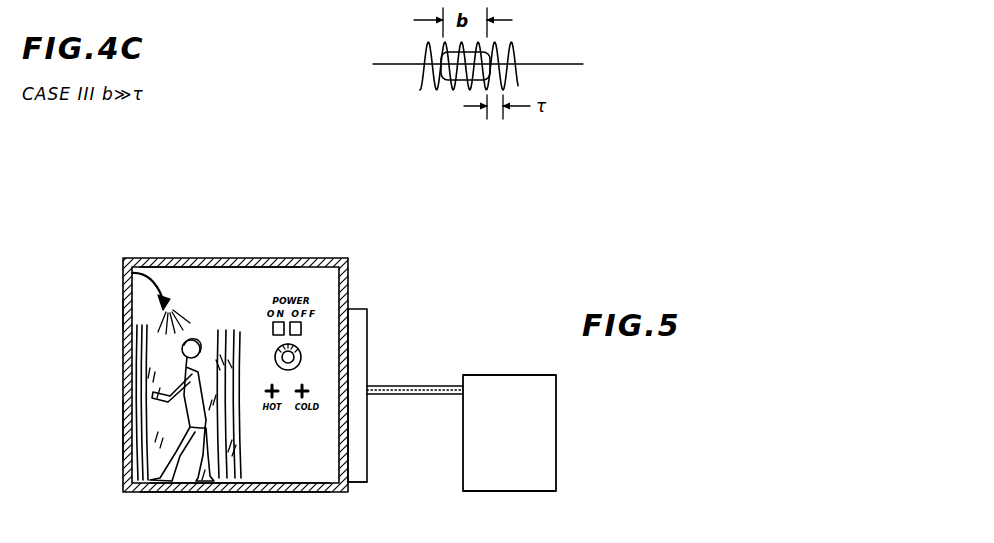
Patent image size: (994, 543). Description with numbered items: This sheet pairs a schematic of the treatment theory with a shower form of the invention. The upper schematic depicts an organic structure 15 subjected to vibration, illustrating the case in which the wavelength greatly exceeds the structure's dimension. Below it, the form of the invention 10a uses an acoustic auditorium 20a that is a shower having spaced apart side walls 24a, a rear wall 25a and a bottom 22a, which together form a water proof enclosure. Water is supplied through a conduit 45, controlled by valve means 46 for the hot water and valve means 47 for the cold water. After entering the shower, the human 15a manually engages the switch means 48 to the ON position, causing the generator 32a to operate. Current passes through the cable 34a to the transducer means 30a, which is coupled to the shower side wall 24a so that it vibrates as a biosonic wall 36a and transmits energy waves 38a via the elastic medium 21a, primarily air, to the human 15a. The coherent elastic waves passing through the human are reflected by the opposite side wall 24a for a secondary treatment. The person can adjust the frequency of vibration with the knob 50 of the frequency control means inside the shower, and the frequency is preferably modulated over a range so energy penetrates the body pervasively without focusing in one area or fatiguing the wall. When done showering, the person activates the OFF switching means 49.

In FIG. 4C, the organic structure 15 is at (445, 83).
In FIG. 5, the form of the invention 10a is at (313, 256).
In FIG. 5, the acoustic auditorium 20a is at (122, 314).
In FIG. 5, the rear wall 25a is at (184, 273).
In FIG. 5, the bottom 22a is at (228, 493).
In FIG. 5, the elastic medium 21a is at (302, 470).
In FIG. 5, the side wall 24a is at (125, 437).
In FIG. 5, the biosonic wall 36a is at (367, 470).
In FIG. 5, the transducer means 30a is at (367, 312).
In FIG. 5, the cable 34a is at (425, 388).
In FIG. 5, the generator 32a is at (556, 407).
In FIG. 5, the conduit 45 is at (152, 273).
In FIG. 5, the human 15a is at (221, 318).
In FIG. 5, the energy waves 38a is at (147, 372).
In FIG. 5, the switch means 48 is at (272, 330).
In FIG. 5, the OFF switching means 49 is at (302, 329).
In FIG. 5, the knob 50 is at (275, 357).
In FIG. 5, the valve means 46 is at (267, 391).
In FIG. 5, the valve means 47 is at (306, 388).